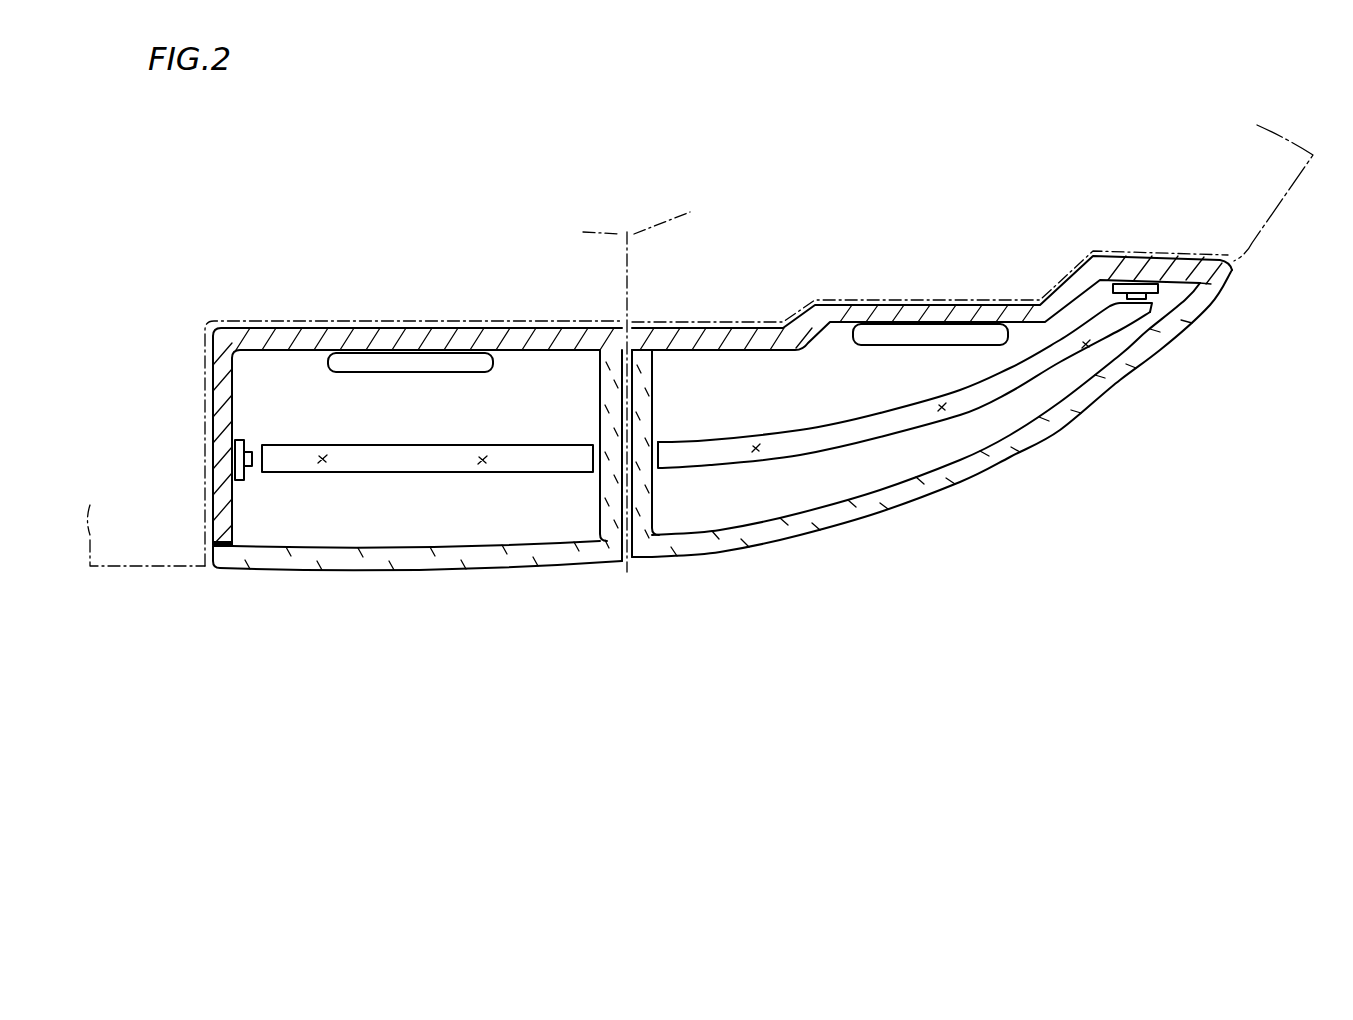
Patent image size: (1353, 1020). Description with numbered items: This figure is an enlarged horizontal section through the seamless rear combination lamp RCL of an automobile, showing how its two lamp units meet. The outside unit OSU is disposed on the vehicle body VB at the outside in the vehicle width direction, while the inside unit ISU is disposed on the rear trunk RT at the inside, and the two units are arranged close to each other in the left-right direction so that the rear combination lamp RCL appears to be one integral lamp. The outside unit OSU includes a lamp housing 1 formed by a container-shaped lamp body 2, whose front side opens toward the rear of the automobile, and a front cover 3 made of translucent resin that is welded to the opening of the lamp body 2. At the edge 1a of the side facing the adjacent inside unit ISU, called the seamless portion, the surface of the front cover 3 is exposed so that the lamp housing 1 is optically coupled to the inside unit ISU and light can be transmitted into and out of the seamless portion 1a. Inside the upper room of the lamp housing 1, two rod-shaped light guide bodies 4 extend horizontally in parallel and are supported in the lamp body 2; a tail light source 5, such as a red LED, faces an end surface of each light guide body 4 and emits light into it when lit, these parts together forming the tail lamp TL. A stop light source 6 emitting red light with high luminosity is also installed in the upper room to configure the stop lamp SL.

The lamp housing 1 is at (256, 577).
The edge (seamless portion) 1a is at (620, 562).
The lamp body 2 is at (315, 338).
The front cover 3 is at (320, 568).
The light guide body 4 is at (320, 447).
The tail light source 5 is at (228, 456).
The stop light source 6 is at (424, 358).
The stop lamp SL is at (520, 370).
The tail lamp TL is at (486, 496).
The inside unit ISU is at (410, 583).
The outside unit OSU is at (1036, 462).
The rear combination lamp RCL is at (824, 642).
The rear trunk RT is at (122, 556).
The vehicle body VB is at (1240, 252).